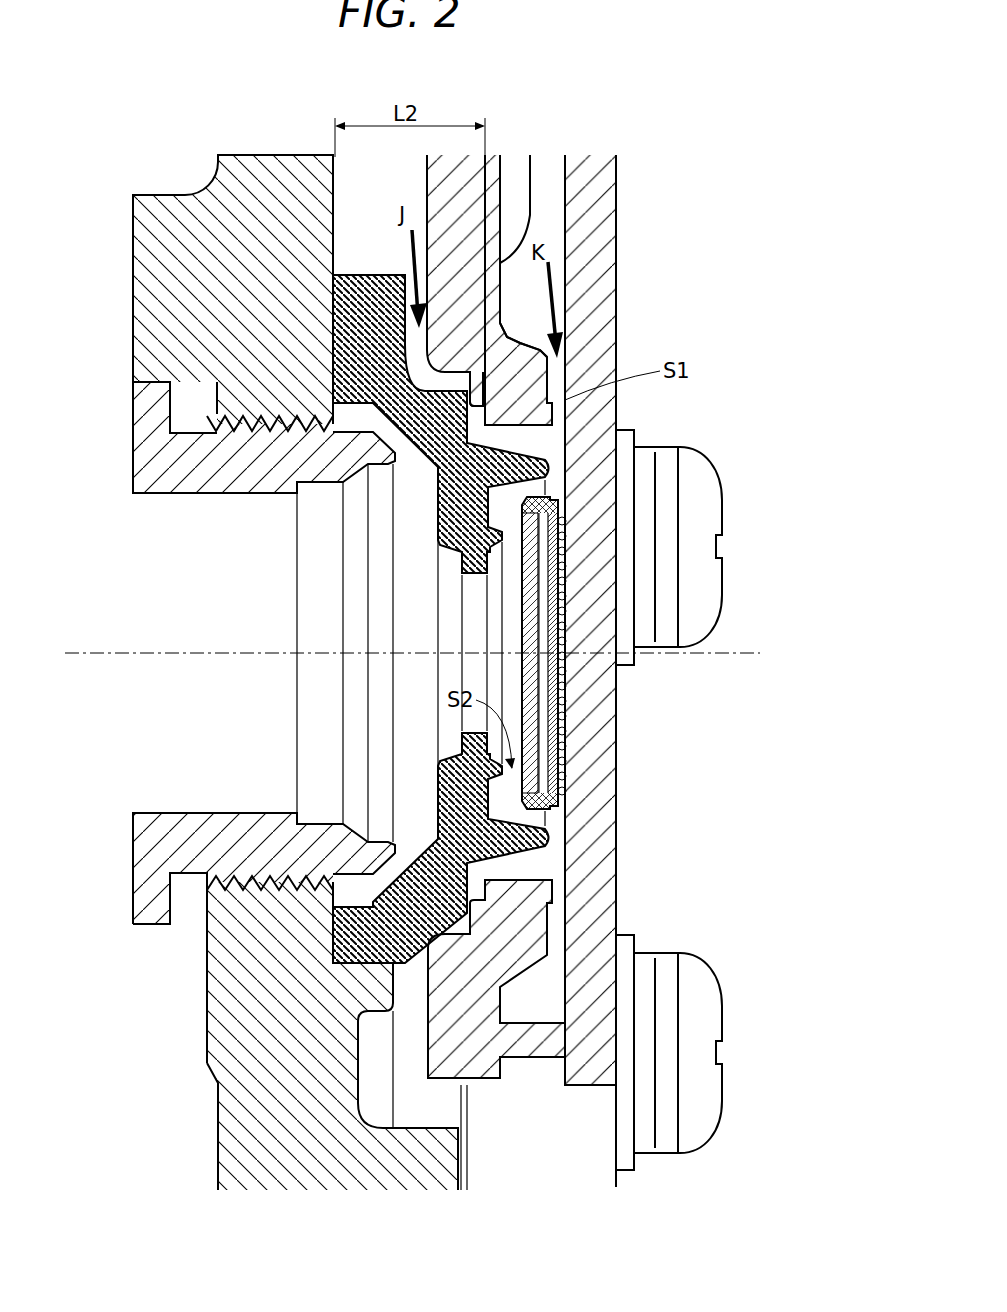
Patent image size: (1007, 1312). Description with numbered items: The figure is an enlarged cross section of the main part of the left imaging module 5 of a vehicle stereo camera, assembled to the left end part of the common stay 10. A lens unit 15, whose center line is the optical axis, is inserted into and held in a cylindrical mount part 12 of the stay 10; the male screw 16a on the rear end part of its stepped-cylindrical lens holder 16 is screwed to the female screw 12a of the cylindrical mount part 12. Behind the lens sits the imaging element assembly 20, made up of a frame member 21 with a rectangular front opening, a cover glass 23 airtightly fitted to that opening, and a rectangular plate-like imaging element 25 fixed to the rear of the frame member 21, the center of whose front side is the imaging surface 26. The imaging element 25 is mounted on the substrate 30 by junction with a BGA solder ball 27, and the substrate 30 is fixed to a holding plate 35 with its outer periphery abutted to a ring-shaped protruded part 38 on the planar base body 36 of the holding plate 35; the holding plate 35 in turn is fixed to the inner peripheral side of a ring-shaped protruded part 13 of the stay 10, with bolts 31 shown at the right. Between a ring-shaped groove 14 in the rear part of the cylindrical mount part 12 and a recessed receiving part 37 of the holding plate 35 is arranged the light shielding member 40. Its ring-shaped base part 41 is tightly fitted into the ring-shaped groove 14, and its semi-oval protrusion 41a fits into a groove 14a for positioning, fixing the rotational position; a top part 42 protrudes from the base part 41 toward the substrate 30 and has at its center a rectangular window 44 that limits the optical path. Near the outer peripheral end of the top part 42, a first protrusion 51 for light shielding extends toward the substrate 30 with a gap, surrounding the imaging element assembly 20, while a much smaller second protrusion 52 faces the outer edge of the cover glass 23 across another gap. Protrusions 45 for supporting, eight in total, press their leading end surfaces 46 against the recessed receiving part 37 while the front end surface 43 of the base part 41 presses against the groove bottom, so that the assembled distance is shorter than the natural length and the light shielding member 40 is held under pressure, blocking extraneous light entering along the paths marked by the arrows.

The imaging module 5 is at (272, 135).
The stay 10 is at (182, 192).
The cylindrical mount part 12 is at (150, 385).
The female screw 12a is at (280, 890).
The ring-shaped protruded part 13 is at (440, 1160).
The ring-shaped groove 14 is at (330, 935).
The groove for positioning 14a is at (333, 338).
The lens unit 15 is at (230, 485).
The lens holder 16 is at (264, 847).
The male screw 16a is at (222, 890).
The imaging element assembly 20 is at (536, 619).
The frame member 21 is at (566, 535).
The cover glass 23 is at (536, 619).
The imaging element 25 is at (560, 715).
The imaging surface 26 is at (565, 612).
The BGA solder ball 27 is at (560, 672).
The substrate 30 is at (590, 287).
The bolt 31 is at (705, 598).
The holding plate 35 is at (576, 290).
The planar base body 36 is at (503, 230).
The recessed receiving part 37 is at (548, 910).
The ring-shaped protruded part 38 is at (537, 1040).
The light shielding member 40 is at (396, 419).
The base part 41 is at (396, 419).
The protrusion for positioning 41a is at (347, 293).
The top part 42 is at (441, 846).
The front end surface 43 is at (396, 419).
The rectangular window 44 is at (462, 737).
The protrusion for supporting 45 is at (473, 372).
The leading end surface 46 is at (510, 352).
The first protrusion for light shielding 51 is at (565, 460).
The second protrusion for light shielding 52 is at (520, 790).